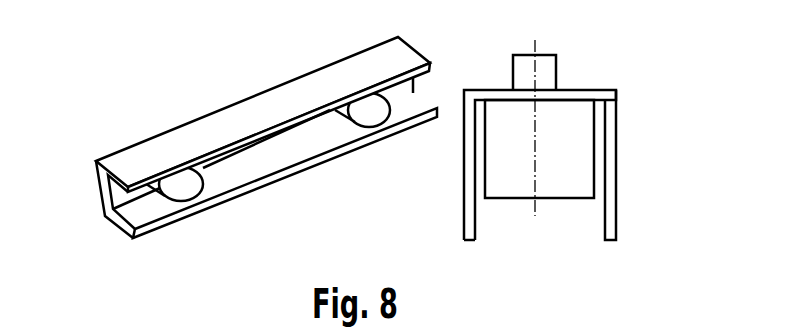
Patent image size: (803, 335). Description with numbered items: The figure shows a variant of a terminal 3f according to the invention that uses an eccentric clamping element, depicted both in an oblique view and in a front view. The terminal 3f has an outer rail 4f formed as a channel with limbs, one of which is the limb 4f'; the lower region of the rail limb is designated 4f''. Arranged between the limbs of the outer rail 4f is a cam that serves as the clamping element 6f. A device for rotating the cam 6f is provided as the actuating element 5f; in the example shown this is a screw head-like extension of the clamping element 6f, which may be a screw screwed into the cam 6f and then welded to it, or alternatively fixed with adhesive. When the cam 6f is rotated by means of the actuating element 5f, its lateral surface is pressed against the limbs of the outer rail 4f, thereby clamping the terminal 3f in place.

The terminal 3f is at (100, 52).
The outer rail 4f is at (424, 131).
The limb of the outer rail 4f' is at (639, 165).
The lower edge of housing leg 4f'' is at (407, 174).
The actuating element 5f is at (556, 68).
The clamping element 6f is at (153, 167).